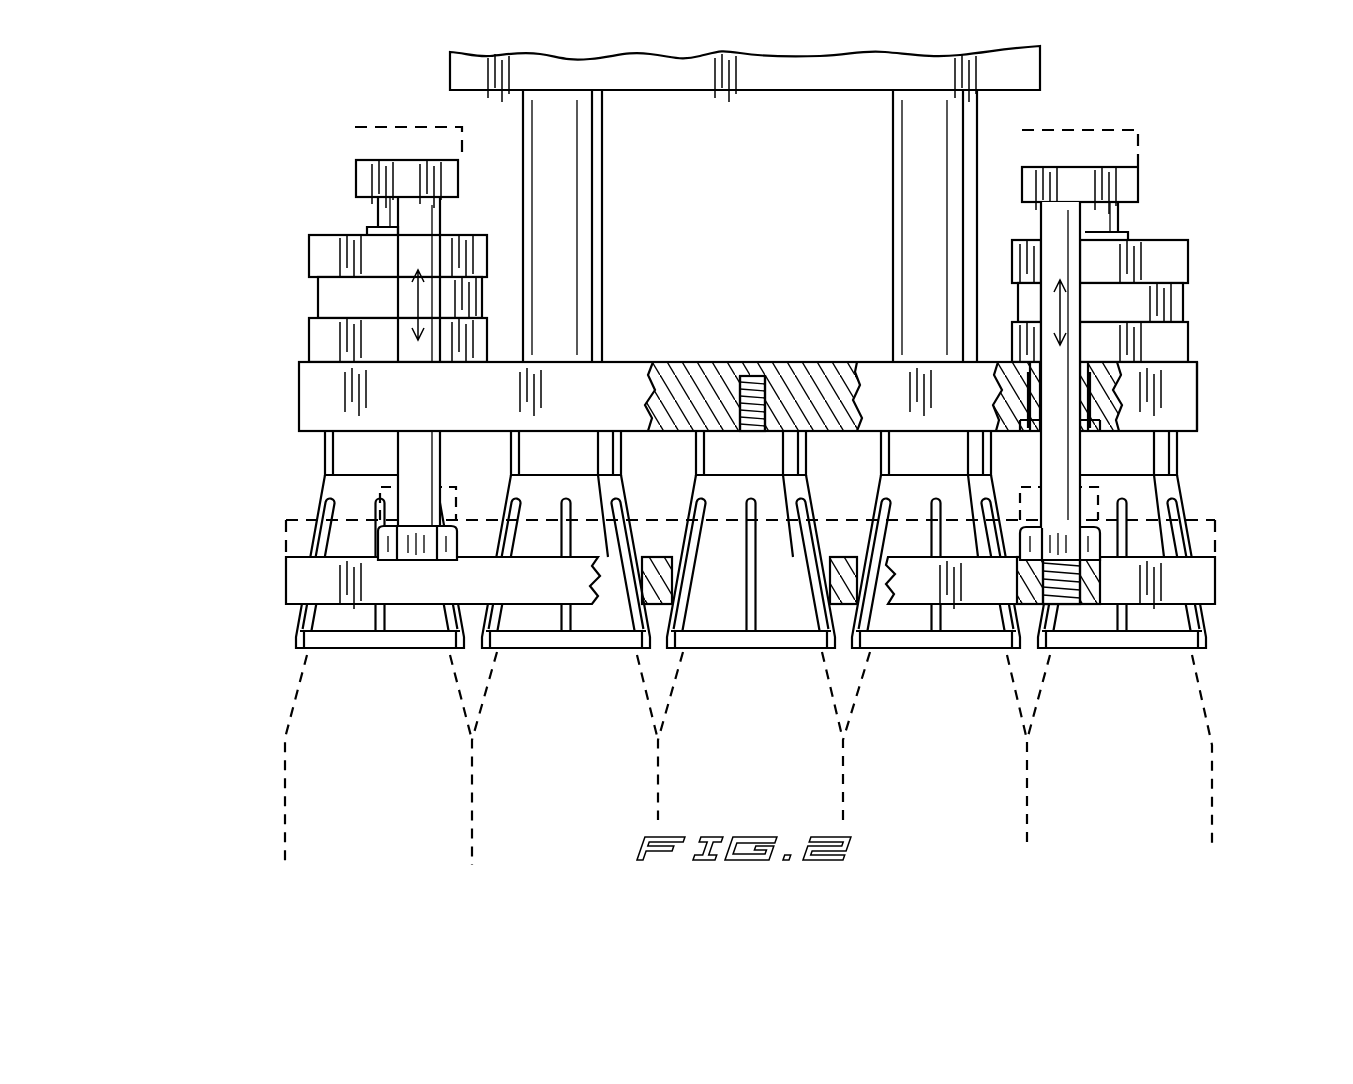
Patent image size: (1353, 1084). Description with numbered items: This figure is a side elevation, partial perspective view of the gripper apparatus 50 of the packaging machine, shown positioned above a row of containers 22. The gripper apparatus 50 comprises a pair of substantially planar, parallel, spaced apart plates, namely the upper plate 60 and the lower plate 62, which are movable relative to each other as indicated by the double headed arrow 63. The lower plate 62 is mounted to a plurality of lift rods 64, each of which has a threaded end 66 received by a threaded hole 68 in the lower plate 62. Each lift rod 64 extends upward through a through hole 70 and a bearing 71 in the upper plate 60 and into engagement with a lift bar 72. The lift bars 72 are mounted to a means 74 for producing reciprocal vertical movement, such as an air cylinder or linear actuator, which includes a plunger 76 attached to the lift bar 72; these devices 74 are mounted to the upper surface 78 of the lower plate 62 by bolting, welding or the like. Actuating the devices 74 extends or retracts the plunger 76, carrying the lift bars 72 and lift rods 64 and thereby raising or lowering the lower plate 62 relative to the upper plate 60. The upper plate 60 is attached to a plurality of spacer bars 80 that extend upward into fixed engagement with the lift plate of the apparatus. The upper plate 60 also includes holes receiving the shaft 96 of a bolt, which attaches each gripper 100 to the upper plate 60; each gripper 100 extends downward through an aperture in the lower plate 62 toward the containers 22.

The containers 22 is at (285, 745).
The gripper apparatus 50 is at (1243, 118).
The upper plate 60 is at (287, 401).
The lower plate 62 is at (283, 585).
The double headed arrow 63 is at (418, 307).
The lift rod 64 is at (1085, 455).
The threaded end 66 is at (1070, 575).
The threaded hole 68 is at (1100, 595).
The through hole 70 is at (1075, 415).
The bearing 71 is at (1090, 378).
The lift bar 72 is at (355, 178).
The means for producing reciprocal vertical movement 74 is at (298, 258).
The plunger 76 is at (378, 210).
The upper surface 78 is at (1195, 364).
The spacer bar 80 is at (602, 150).
The shaft 96 is at (765, 385).
The gripper 100 is at (308, 489).